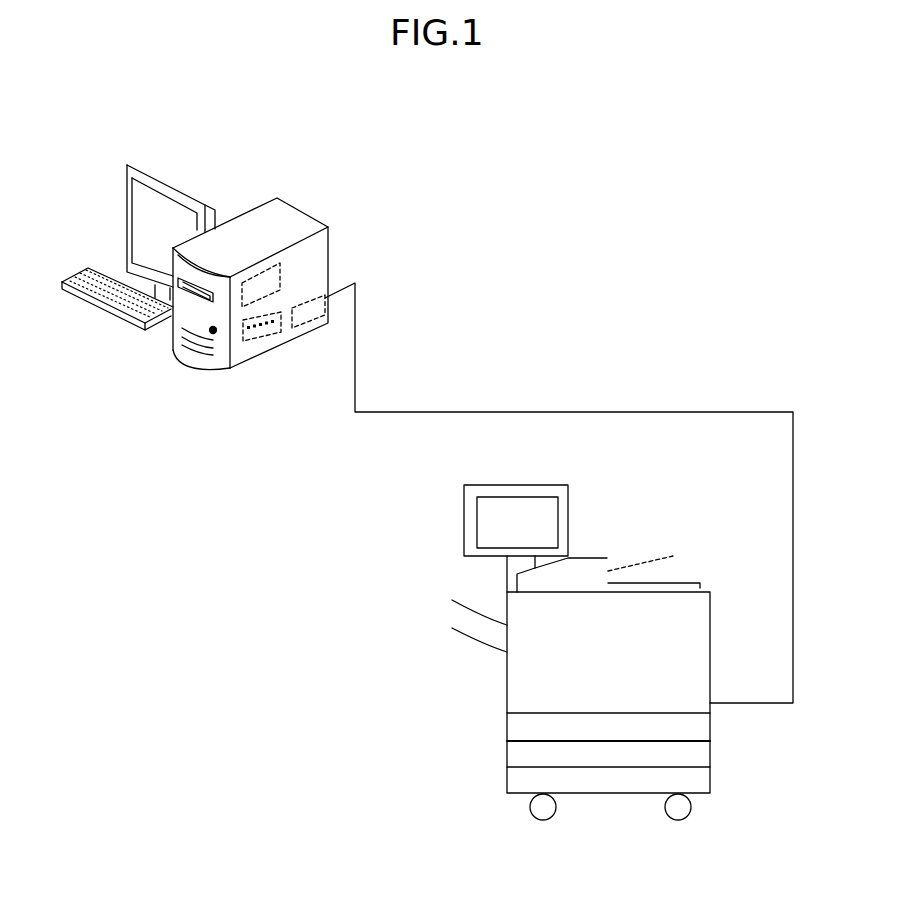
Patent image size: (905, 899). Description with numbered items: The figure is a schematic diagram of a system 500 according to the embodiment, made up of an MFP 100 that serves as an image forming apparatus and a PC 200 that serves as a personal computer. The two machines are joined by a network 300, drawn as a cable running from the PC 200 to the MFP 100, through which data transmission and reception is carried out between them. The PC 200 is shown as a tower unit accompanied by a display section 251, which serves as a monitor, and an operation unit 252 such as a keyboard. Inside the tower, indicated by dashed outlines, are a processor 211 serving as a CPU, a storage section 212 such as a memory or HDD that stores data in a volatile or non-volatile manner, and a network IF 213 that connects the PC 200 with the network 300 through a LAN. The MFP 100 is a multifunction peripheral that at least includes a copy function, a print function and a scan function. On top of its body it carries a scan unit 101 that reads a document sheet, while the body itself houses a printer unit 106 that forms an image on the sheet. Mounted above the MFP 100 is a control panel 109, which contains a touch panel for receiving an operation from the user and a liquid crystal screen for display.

The system 500 is at (734, 149).
The PC 200 is at (294, 181).
The processor 211 is at (248, 281).
The storage section 212 is at (269, 337).
The network IF 213 is at (324, 296).
The display section 251 is at (157, 196).
The operation unit 252 is at (122, 324).
The network 300 is at (644, 412).
The MFP 100 is at (672, 477).
The control panel 109 is at (526, 487).
The scan unit 101 is at (726, 557).
The printer unit 106 is at (712, 607).